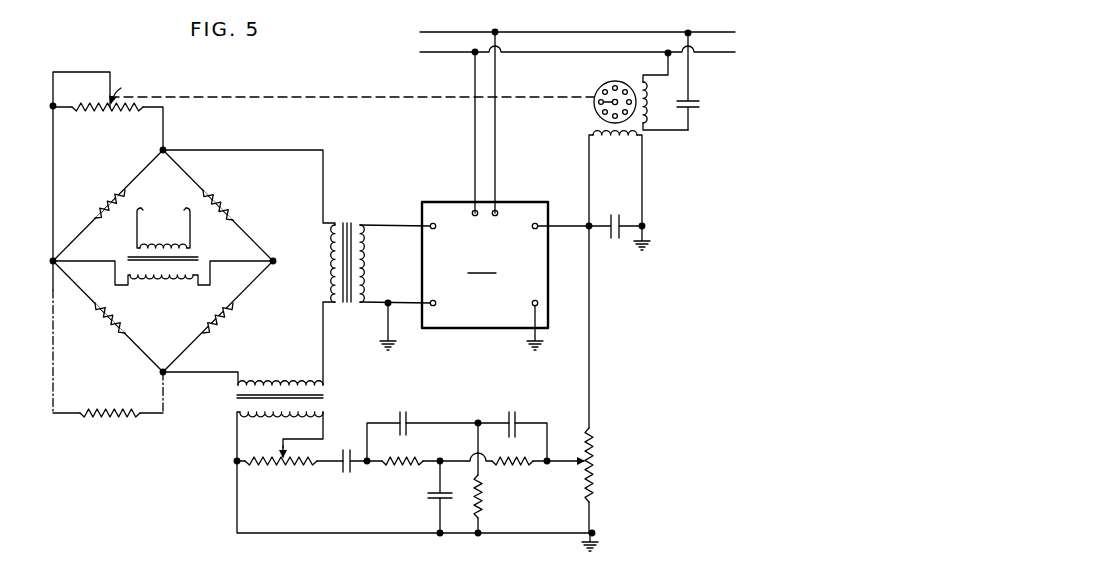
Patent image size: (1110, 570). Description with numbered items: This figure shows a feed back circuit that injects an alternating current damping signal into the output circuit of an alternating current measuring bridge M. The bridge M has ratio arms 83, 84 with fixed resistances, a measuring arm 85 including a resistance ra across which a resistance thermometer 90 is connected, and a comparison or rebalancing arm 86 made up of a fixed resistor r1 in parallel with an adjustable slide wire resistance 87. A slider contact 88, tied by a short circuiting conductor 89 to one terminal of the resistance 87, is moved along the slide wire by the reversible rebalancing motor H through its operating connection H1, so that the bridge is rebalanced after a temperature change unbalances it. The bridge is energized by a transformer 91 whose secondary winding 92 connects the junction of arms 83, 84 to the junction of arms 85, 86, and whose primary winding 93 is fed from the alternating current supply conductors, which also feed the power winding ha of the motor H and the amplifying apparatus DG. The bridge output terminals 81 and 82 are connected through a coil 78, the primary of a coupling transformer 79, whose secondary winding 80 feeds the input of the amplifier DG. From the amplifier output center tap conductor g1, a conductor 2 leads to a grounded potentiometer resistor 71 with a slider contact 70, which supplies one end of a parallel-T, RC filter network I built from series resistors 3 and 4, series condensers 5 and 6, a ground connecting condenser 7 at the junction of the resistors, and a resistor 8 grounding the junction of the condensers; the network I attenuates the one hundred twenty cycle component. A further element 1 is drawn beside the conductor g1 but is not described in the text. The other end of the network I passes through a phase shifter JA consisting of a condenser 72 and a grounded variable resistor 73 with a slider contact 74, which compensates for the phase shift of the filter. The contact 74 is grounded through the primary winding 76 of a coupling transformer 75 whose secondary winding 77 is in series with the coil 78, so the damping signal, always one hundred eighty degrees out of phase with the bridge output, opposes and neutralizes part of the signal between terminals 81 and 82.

The capacitor 1 is at (615, 242).
The conductor 2 is at (593, 320).
The resistor 3 is at (512, 467).
The resistor 4 is at (402, 466).
The condenser 5 is at (513, 413).
The condenser 6 is at (403, 412).
The ground connecting condenser 7 is at (426, 496).
The resistor 8 is at (483, 497).
The slider contact 70 is at (582, 468).
The potentiometer resistor 71 is at (597, 457).
The condenser element 72 is at (350, 472).
The variable resistor 73 is at (287, 460).
The slider contact 74 is at (280, 456).
The coupling transformer 75 is at (327, 398).
The primary winding 76 is at (281, 416).
The secondary winding 77 is at (298, 383).
The coil 78 is at (334, 268).
The coupling transformer 79 is at (345, 223).
The secondary winding 80 is at (364, 262).
The output terminal conductor 81 is at (205, 372).
The output terminal 82 is at (283, 150).
The ratio arm 83 is at (252, 283).
The ratio arm 84 is at (251, 238).
The measuring arm 85 is at (139, 347).
The comparison or rebalancing arm 86 is at (79, 233).
The adjustable resistance 87 is at (115, 109).
The slider contact 88 is at (126, 87).
The short circuiting conductor 89 is at (88, 72).
The resistance thermometer 90 is at (114, 415).
The transformer 91 is at (128, 257).
The secondary winding 92 is at (167, 278).
The primary winding 93 is at (171, 245).
The alternating current measuring circuit M is at (204, 129).
The operating connection H1 is at (285, 97).
The reversible rebalancing motor H is at (597, 93).
The relay coil h is at (618, 140).
The power winding ha is at (652, 105).
The capacitor Ia is at (703, 104).
The parallel-T, RC network I is at (493, 417).
The phase shifter JA is at (292, 477).
The alternating current voltage and motor drive amplifying apparatus DG is at (485, 276).
The center tap conductor g1 is at (569, 226).
The fixed resistor r1 is at (108, 198).
The resistance ra is at (101, 322).